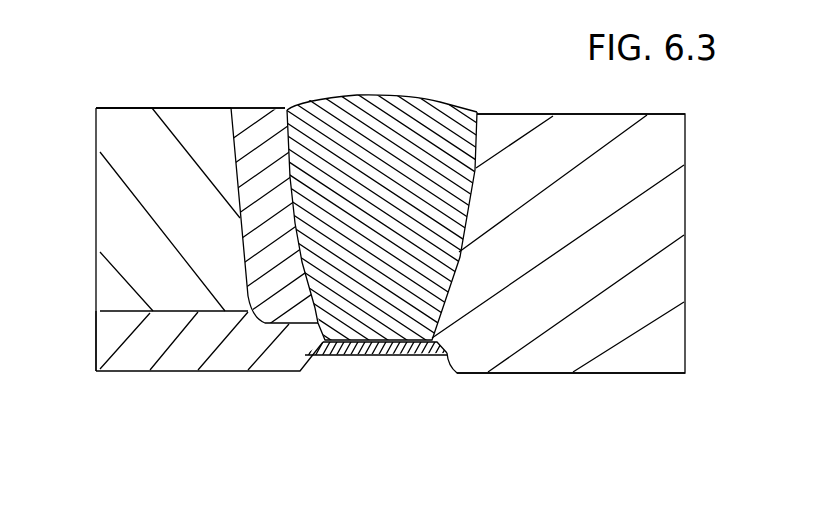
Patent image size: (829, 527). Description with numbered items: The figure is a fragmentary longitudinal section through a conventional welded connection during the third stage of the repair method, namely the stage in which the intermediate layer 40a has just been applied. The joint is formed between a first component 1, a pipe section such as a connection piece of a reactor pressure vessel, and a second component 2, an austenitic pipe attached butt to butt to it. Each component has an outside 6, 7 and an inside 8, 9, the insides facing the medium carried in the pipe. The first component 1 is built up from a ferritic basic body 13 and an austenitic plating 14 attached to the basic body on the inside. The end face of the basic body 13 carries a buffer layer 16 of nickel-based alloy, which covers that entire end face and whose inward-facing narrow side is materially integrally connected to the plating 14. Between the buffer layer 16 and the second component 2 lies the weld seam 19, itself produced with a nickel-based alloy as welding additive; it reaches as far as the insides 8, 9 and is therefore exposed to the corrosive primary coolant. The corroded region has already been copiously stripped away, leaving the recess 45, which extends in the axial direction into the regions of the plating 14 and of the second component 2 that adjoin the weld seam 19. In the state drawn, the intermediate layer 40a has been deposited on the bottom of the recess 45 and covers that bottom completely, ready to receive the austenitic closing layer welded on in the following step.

The first component 1 is at (169, 150).
The second component 2 is at (640, 228).
The outside 6 is at (200, 108).
The outside 7 is at (620, 112).
The inside 8 is at (182, 372).
The inside 9 is at (600, 374).
The basic body 13 is at (130, 235).
The plating 14 is at (211, 372).
The buffer layer 16 is at (256, 160).
The weld seam 19 is at (372, 155).
The intermediate layer 40a is at (387, 355).
The recess 45 is at (337, 372).